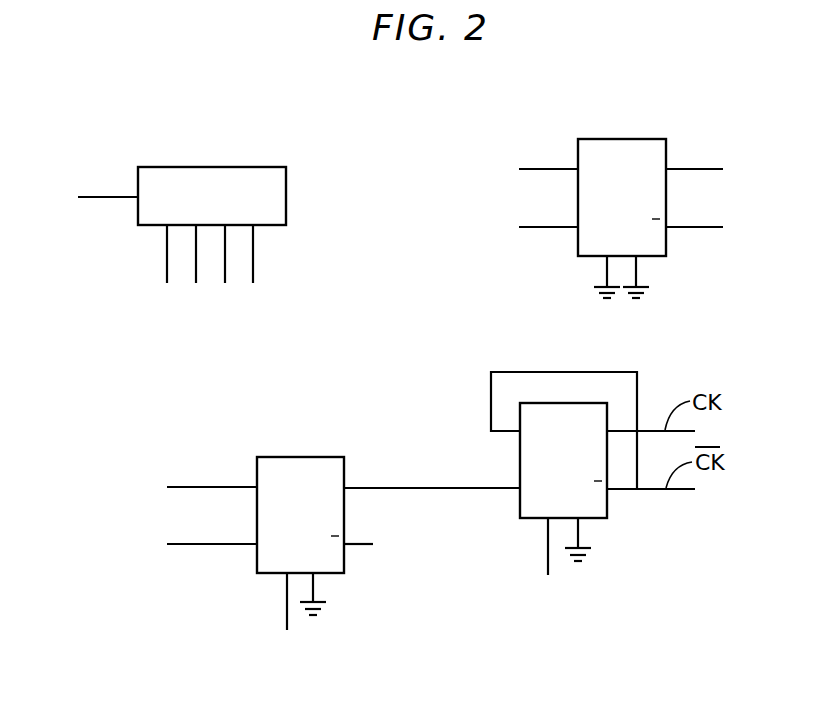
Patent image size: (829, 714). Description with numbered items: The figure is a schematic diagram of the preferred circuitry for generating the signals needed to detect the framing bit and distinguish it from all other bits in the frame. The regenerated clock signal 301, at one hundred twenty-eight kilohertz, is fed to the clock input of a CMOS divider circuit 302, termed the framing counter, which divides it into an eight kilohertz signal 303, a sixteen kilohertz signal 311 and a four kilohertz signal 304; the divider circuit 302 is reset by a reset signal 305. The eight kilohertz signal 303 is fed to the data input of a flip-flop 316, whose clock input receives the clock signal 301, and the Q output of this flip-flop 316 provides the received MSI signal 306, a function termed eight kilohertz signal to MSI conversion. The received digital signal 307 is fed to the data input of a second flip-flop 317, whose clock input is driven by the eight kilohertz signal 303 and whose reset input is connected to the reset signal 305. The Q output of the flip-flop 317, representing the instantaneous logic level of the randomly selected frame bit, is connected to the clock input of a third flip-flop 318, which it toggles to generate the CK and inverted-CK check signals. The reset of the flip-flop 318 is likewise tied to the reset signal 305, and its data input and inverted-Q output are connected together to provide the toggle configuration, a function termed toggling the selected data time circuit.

The regenerated clock signal 301 is at (108, 196).
The divider circuit 302 is at (212, 167).
The eight kilohertz signal 303 is at (254, 272).
The four kilohertz signal 304 is at (196, 287).
The reset signal 305 is at (167, 270).
The received MSI signal 306 is at (696, 169).
The received digital signal 307 is at (198, 486).
The sixteen kilohertz signal 311 is at (227, 287).
The flip-flop 316 is at (622, 139).
The flip-flop 317 is at (301, 457).
The flip-flop 318 is at (606, 518).